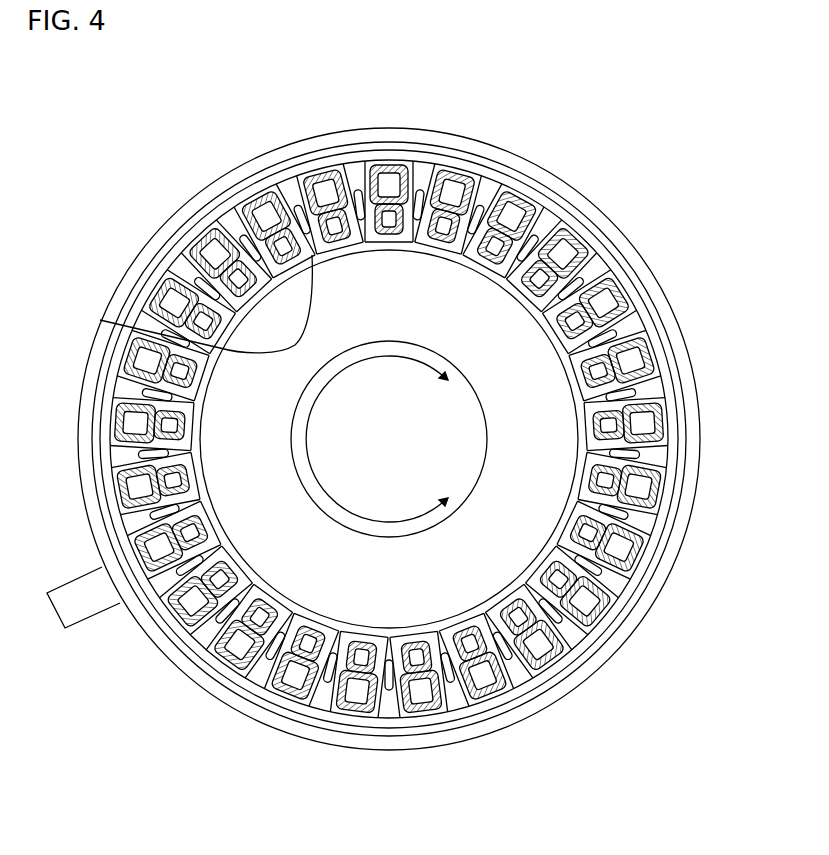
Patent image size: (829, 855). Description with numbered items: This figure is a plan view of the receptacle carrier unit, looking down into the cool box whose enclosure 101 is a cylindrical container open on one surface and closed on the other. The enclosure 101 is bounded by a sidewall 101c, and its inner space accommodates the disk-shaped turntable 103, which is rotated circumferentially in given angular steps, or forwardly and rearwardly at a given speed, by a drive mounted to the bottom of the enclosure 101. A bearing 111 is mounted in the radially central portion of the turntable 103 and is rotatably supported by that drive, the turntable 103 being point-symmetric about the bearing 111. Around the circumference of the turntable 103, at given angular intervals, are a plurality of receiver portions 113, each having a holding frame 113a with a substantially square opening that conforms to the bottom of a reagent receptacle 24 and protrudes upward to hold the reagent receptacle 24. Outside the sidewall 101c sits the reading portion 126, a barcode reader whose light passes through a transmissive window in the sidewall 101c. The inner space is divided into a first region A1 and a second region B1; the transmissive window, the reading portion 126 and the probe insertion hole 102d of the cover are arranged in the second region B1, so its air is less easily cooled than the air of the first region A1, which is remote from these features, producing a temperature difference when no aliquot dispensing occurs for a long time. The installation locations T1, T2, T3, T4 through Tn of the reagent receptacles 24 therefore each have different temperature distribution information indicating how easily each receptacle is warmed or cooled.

The enclosure 101 is at (493, 152).
The sidewall 101c is at (673, 390).
The probe insertion hole 102d is at (212, 243).
The turntable 103 is at (672, 467).
The bearing 111 is at (582, 296).
The receiver portion 113 is at (485, 703).
The holding frame 113a is at (388, 703).
The reagent receptacle 24 is at (627, 597).
The reading portion 126 is at (62, 622).
The first region A1 is at (448, 427).
The second region B1 is at (150, 237).
The installation location T1 is at (367, 340).
The installation location T2 is at (403, 198).
The installation location T3 is at (460, 198).
The installation location T4 is at (523, 222).
The installation location Tn is at (255, 158).